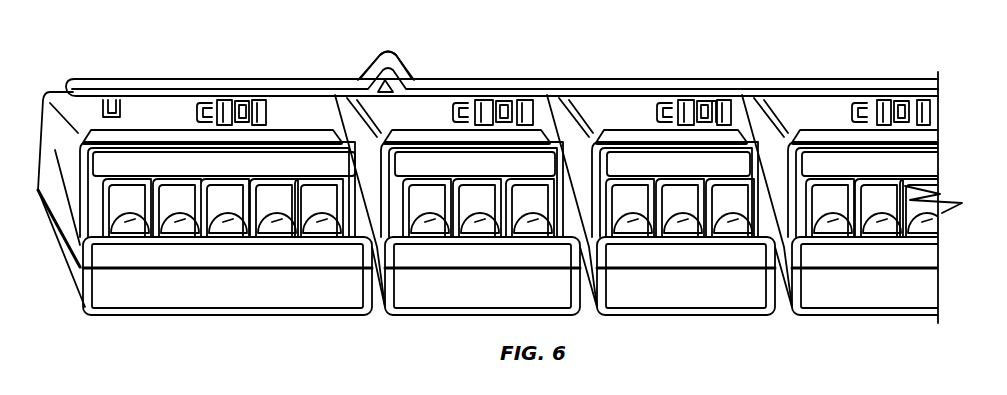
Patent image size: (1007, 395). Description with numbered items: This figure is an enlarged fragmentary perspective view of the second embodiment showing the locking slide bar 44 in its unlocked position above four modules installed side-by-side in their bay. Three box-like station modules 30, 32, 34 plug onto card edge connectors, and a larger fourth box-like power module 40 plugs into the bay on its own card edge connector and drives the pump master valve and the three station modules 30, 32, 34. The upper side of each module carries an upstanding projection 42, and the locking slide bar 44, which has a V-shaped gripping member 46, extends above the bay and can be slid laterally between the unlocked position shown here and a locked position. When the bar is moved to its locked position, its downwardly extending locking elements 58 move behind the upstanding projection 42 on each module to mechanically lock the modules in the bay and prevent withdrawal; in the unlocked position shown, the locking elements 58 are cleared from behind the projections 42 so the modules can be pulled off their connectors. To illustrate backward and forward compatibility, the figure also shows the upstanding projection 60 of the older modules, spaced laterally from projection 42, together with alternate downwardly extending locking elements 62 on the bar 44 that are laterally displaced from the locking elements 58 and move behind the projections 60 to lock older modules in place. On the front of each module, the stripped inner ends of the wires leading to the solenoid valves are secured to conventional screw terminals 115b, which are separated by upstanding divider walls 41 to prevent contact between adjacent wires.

The station module 30 is at (421, 122).
The station module 32 is at (628, 122).
The station module 34 is at (826, 122).
The power module 40 is at (163, 122).
The divider wall 41 is at (245, 200).
The upstanding projection 42 is at (243, 103).
The locking slide bar 44 is at (716, 103).
The V-shaped gripping member 46 is at (374, 62).
The locking element 58 is at (263, 103).
The upstanding projection 60 is at (203, 105).
The locking element 62 is at (226, 103).
The screw terminal 115b is at (182, 205).